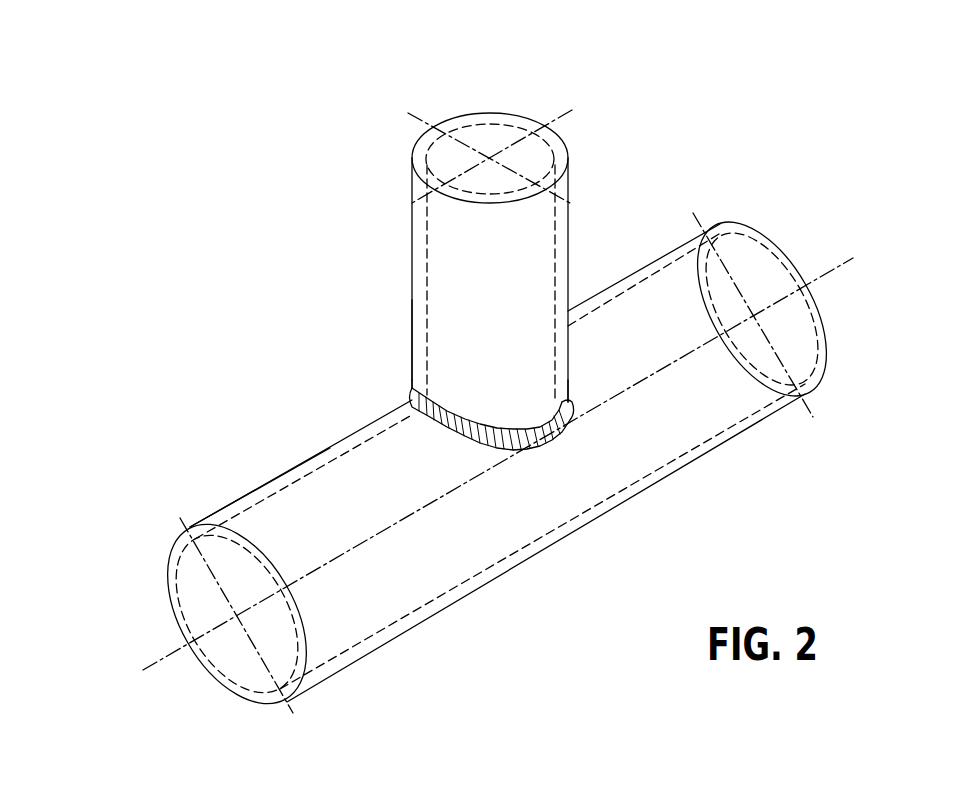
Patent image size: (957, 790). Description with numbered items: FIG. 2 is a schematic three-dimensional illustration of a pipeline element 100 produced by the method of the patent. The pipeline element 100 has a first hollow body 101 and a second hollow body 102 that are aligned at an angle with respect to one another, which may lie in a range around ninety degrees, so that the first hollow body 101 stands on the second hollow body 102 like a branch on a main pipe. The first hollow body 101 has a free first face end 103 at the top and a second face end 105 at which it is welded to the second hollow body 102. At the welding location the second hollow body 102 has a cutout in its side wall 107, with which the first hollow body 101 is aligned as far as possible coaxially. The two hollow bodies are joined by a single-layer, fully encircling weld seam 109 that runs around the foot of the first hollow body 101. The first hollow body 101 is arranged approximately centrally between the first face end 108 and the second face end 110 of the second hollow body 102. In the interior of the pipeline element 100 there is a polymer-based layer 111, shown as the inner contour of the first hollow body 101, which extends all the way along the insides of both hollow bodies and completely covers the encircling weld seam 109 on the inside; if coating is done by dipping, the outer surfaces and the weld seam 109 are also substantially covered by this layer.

The pipeline element 100 is at (182, 132).
The first hollow body 101 is at (576, 228).
The second hollow body 102 is at (350, 628).
The first face end 103 is at (451, 94).
The second face end 105 is at (464, 390).
The side wall 107 is at (412, 297).
The first face end 108 is at (122, 637).
The weld seam 109 is at (565, 462).
The second face end 110 is at (838, 315).
The polymer-based layer 111 is at (430, 234).